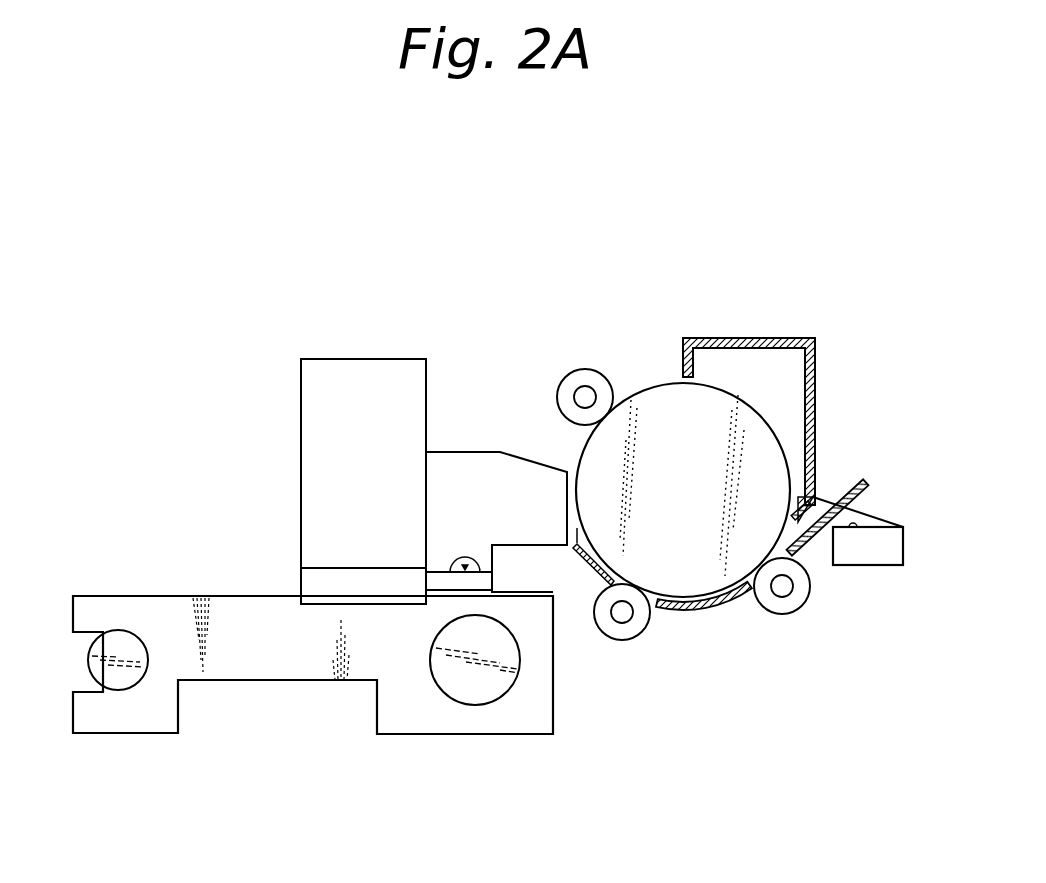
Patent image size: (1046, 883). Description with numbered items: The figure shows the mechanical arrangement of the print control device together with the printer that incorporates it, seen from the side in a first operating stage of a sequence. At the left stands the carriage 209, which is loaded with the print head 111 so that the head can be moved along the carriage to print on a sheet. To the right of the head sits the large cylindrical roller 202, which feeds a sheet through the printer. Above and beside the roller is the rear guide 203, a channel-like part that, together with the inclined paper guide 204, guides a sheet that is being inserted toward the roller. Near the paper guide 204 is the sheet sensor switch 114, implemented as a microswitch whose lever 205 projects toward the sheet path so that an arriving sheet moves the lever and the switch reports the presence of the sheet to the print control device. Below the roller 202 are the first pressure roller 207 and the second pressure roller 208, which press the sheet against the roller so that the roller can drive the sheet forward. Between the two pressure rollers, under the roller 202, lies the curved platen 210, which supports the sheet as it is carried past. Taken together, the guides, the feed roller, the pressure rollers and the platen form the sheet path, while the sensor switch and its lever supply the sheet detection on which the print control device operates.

The print head 111 is at (368, 357).
The carriage 209 is at (273, 663).
The roller 202 is at (578, 378).
The rear guide 203 is at (768, 337).
The paper guide 204 is at (850, 480).
The lever 205 is at (870, 507).
The sheet sensor switch 114 is at (907, 547).
The first pressure roller 207 is at (790, 613).
The second pressure roller 208 is at (622, 641).
The platen 210 is at (715, 572).